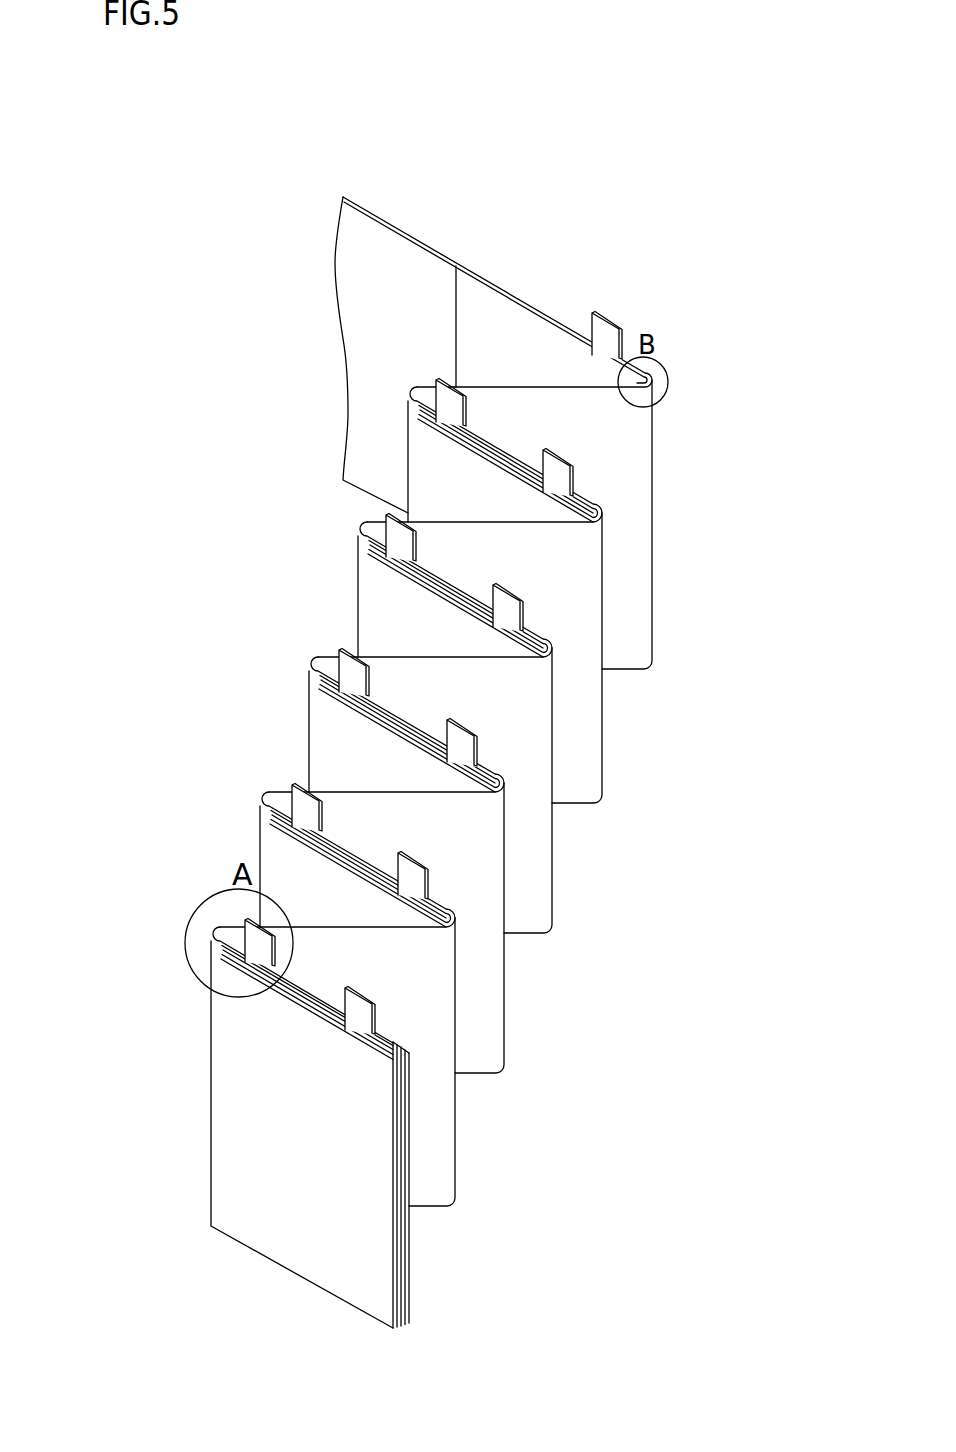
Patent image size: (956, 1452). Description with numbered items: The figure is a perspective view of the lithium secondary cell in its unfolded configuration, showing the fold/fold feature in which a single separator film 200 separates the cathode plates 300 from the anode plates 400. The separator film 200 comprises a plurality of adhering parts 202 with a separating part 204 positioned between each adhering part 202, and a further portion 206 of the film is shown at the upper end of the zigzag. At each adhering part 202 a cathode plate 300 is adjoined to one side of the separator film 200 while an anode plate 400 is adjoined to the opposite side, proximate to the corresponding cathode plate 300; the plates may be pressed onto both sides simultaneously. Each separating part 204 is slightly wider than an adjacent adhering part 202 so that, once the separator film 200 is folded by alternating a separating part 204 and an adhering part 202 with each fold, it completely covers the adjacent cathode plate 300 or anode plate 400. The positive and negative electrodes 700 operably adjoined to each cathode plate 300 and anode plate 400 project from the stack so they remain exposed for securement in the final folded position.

The separator film 200 is at (654, 479).
The adhering part 202 is at (262, 826).
The separating part 204 is at (340, 784).
The third folded portion 206 is at (387, 218).
The cathode plate 300 is at (391, 1034).
The anode plate 400 is at (264, 1247).
The positive and negative electrodes 700 is at (607, 317).